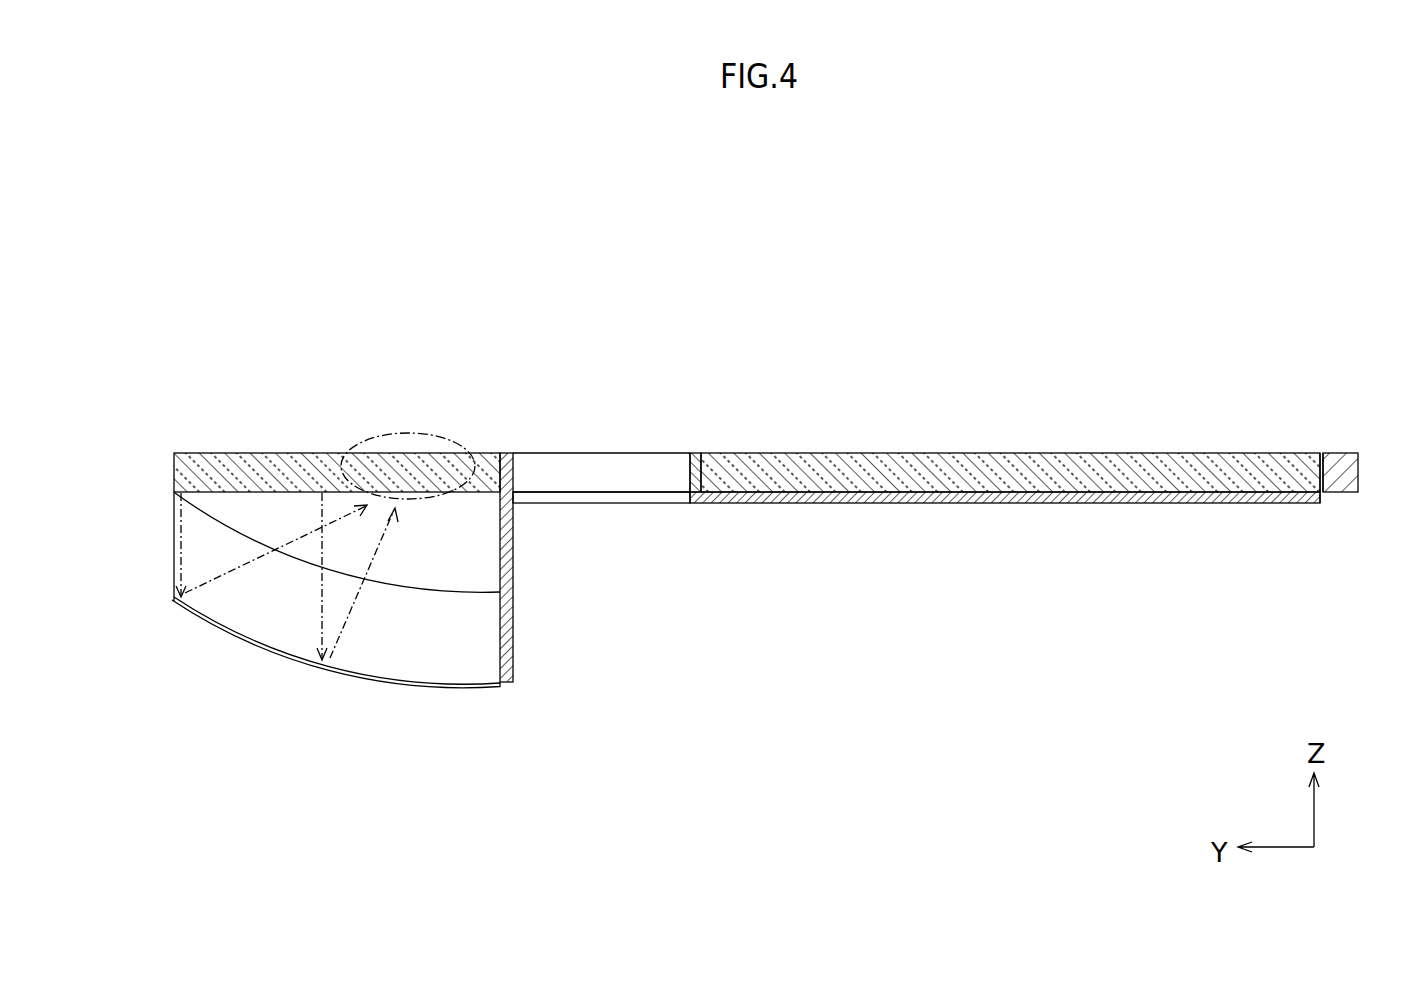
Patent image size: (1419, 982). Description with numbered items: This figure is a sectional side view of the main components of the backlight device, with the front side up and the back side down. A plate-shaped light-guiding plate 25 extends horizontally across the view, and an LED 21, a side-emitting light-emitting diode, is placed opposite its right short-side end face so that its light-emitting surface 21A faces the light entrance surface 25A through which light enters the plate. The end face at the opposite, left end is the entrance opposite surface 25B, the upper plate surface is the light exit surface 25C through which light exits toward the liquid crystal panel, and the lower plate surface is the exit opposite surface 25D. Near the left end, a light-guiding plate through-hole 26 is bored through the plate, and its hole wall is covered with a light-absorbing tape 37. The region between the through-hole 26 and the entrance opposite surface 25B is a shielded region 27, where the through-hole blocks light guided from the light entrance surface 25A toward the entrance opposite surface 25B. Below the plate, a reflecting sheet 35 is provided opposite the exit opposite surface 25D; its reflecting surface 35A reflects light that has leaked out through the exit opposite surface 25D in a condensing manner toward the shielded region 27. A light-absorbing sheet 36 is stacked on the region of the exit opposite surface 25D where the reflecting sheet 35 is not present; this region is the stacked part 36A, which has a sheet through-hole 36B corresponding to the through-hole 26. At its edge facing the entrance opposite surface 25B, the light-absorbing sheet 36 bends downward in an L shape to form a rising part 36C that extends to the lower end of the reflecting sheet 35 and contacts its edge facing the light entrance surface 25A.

The LED 21 is at (1358, 473).
The light-emitting surface 21A is at (1323, 461).
The light-guiding plate 25 is at (719, 475).
The light entrance surface 25A is at (1340, 453).
The entrance opposite surface 25B is at (174, 474).
The light exit surface 25C is at (818, 452).
The exit opposite surface 25D is at (933, 503).
The light-guiding plate through-hole 26 is at (688, 468).
The shielded region 27 is at (392, 453).
The reflecting sheet 35 is at (248, 638).
The reflecting surface 35A is at (373, 677).
The light-absorbing sheet 36 is at (627, 574).
The stacked part 36A is at (713, 500).
The sheet through-hole 36B is at (618, 497).
The rising part 36C is at (513, 573).
The light-absorbing tape 37 is at (513, 474).